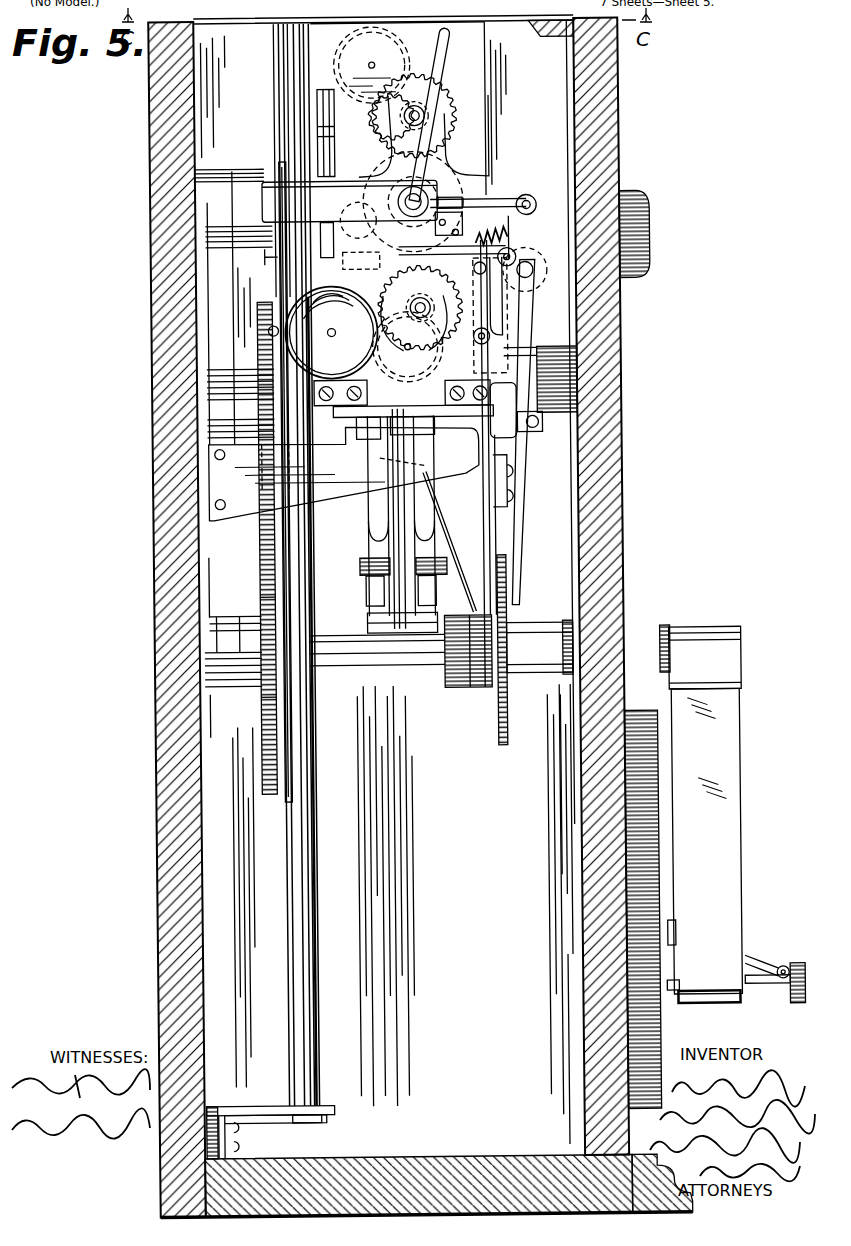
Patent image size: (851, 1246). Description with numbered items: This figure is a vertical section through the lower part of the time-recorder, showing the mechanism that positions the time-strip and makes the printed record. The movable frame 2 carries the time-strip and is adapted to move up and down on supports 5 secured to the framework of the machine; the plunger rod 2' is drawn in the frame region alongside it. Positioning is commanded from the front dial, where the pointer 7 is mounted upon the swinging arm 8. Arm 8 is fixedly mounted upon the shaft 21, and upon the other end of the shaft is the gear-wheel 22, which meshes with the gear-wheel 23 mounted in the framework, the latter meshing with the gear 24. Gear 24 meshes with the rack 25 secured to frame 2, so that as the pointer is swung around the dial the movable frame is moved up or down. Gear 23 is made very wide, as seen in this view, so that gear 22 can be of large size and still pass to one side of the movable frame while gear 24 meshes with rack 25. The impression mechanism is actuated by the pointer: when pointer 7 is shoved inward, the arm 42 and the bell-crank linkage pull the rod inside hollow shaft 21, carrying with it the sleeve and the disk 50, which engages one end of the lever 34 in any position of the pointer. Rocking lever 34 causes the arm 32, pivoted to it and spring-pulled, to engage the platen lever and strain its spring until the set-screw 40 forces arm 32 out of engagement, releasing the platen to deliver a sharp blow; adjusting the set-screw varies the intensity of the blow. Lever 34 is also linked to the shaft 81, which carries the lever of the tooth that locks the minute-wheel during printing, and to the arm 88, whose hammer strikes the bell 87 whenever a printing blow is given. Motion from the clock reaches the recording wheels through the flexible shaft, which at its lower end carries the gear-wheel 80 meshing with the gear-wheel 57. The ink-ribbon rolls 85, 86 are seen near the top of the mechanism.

The movable frame 2 is at (349, 201).
The plunger rod 2' is at (340, 173).
The supports 5 is at (310, 818).
The pointer 7 is at (788, 970).
The swinging arm 8 is at (704, 814).
The shaft 21 is at (424, 658).
The gear-wheel 22 is at (270, 797).
The gear-wheel 23 is at (265, 335).
The gear 24 is at (270, 132).
The rack 25 is at (272, 700).
The arm 32 is at (495, 203).
The lever 34 is at (515, 486).
The set-screw 40 is at (420, 188).
The arm 42 is at (750, 964).
The disk 50 is at (500, 709).
The gear-wheel 57 is at (440, 557).
The gear-wheel 80 is at (358, 563).
The shaft 81 is at (482, 344).
The ink-ribbon roll 85 is at (383, 60).
The ink-ribbon roll 86 is at (417, 323).
The bell 87 is at (331, 332).
The arm 88 is at (262, 260).